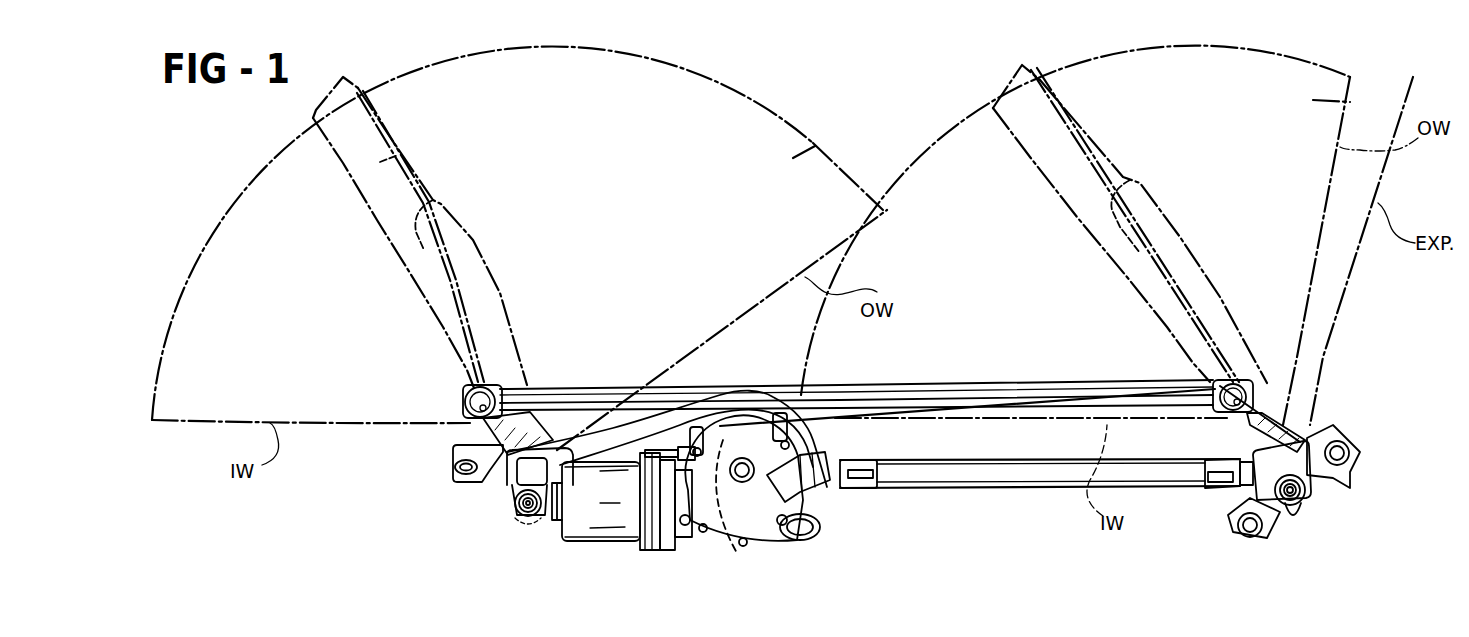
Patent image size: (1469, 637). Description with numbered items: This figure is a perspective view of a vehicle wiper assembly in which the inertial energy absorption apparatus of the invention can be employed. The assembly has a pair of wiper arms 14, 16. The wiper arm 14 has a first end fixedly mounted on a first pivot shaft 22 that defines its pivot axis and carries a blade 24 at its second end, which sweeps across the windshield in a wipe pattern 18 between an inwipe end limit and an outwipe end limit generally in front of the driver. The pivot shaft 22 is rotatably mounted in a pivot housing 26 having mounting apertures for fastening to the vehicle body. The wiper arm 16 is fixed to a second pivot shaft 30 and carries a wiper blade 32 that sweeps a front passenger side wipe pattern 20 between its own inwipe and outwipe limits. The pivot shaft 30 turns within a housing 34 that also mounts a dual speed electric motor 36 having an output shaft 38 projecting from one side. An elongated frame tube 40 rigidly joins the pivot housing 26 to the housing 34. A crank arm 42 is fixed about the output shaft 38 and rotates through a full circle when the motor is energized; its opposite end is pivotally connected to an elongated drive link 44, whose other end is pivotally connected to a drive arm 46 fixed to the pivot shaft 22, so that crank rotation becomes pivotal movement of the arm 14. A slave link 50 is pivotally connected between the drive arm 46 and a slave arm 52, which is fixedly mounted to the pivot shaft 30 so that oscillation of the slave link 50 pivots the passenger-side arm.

The wiper arm 14 is at (1213, 300).
The wiper arm 16 is at (480, 287).
The wipe pattern 18 is at (1350, 102).
The wipe pattern 20 is at (817, 140).
The first pivot shaft 22 is at (1295, 525).
The blade 24 is at (1095, 140).
The pivot housing 26 is at (1323, 495).
The second pivot shaft 30 is at (522, 510).
The wiper blade 32 is at (399, 150).
The housing 34 is at (483, 482).
The dual speed electric motor 36 is at (755, 507).
The output shaft 38 is at (757, 477).
The elongated frame tube 40 is at (957, 485).
The crank arm 42 is at (713, 568).
The drive link 44 is at (840, 418).
The drive arm 46 is at (1293, 420).
The slave link 50 is at (987, 383).
The slave arm 52 is at (470, 380).